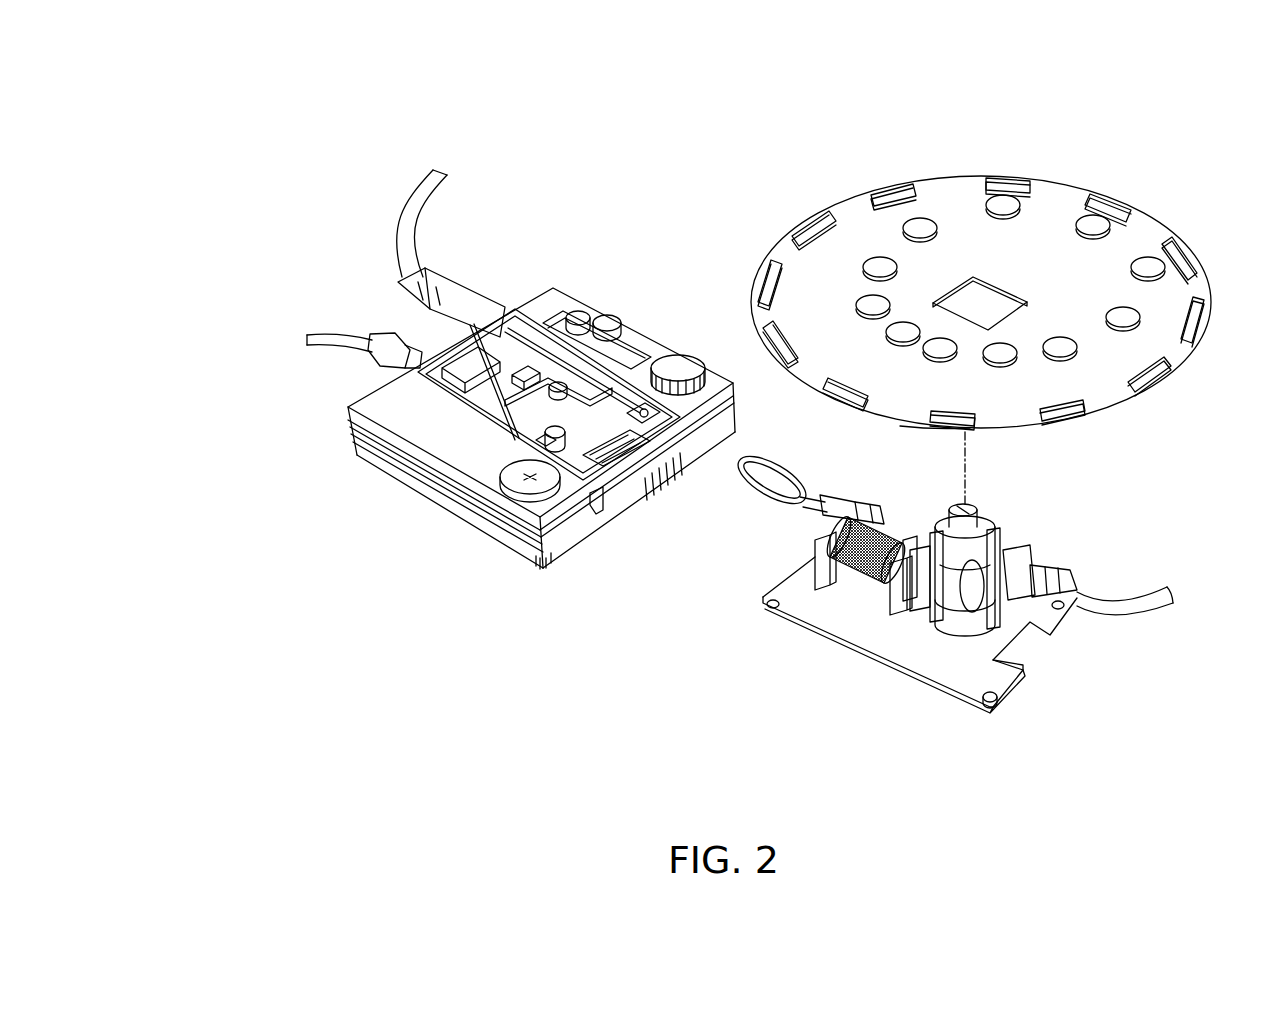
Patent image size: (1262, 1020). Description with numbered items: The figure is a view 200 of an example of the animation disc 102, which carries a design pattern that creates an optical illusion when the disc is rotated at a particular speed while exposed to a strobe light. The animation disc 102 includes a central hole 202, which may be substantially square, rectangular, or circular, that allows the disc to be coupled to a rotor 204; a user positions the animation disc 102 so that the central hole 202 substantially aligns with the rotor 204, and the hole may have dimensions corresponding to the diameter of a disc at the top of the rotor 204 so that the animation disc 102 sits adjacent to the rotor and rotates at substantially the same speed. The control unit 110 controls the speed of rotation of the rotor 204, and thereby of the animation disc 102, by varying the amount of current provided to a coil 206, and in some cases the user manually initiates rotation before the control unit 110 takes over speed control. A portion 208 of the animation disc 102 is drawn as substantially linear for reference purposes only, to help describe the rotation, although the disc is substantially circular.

The view 200 is at (197, 75).
The control unit 110 is at (519, 242).
The animation disc 102 is at (1150, 150).
The central hole 202 is at (985, 270).
The portion 208 is at (1185, 403).
The rotor 204 is at (1025, 480).
The coil 206 is at (846, 586).